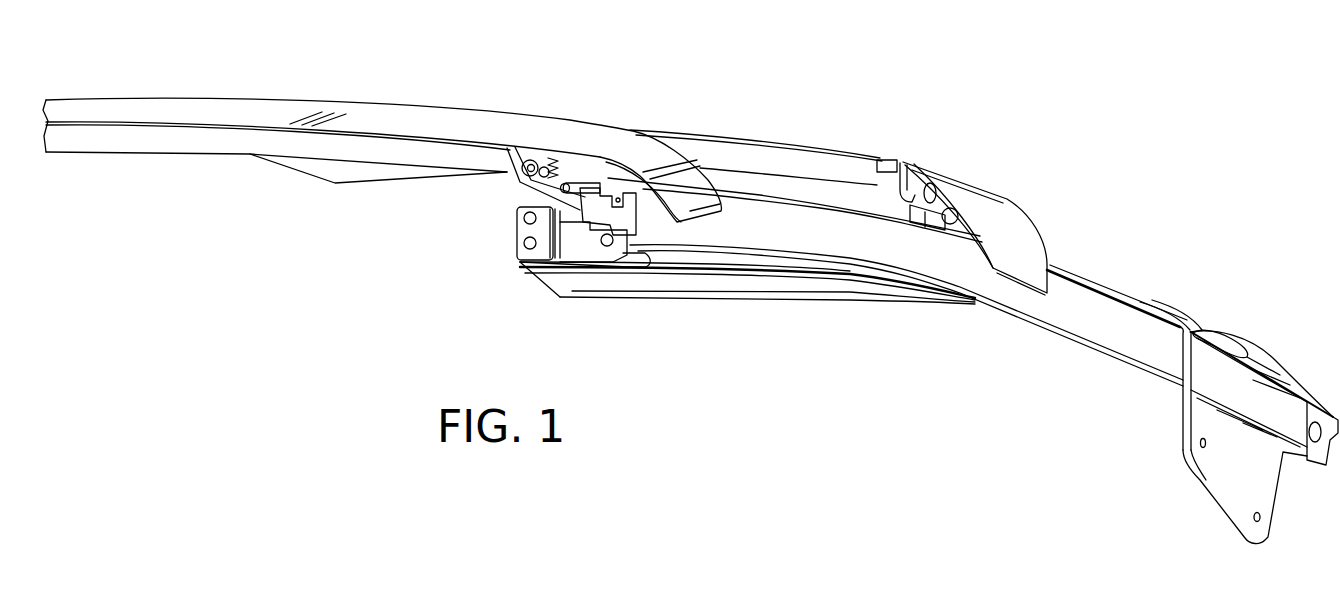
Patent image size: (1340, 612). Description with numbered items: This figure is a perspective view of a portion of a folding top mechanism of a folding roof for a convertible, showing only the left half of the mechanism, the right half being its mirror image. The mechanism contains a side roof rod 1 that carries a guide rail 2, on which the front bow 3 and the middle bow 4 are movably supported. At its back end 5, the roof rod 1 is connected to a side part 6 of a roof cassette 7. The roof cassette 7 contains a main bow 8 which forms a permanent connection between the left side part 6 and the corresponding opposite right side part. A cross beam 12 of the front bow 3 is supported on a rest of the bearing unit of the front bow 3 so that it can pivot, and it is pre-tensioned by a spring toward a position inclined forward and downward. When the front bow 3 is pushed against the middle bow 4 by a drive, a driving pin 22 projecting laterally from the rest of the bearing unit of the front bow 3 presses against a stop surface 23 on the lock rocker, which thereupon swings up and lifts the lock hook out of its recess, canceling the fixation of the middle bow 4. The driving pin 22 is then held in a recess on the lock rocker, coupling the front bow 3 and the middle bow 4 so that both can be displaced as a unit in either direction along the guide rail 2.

The side roof rod 1 is at (905, 258).
The guide rail 2 is at (800, 177).
The front bow 3 is at (492, 100).
The middle bow 4 is at (986, 174).
The back end 5 is at (1180, 365).
The side part 6 is at (1283, 414).
The roof cassette 7 is at (1292, 358).
The main bow 8 is at (728, 284).
The cross beam 12 is at (433, 152).
The driving pin 22 is at (585, 188).
The stop surface 23 is at (897, 162).